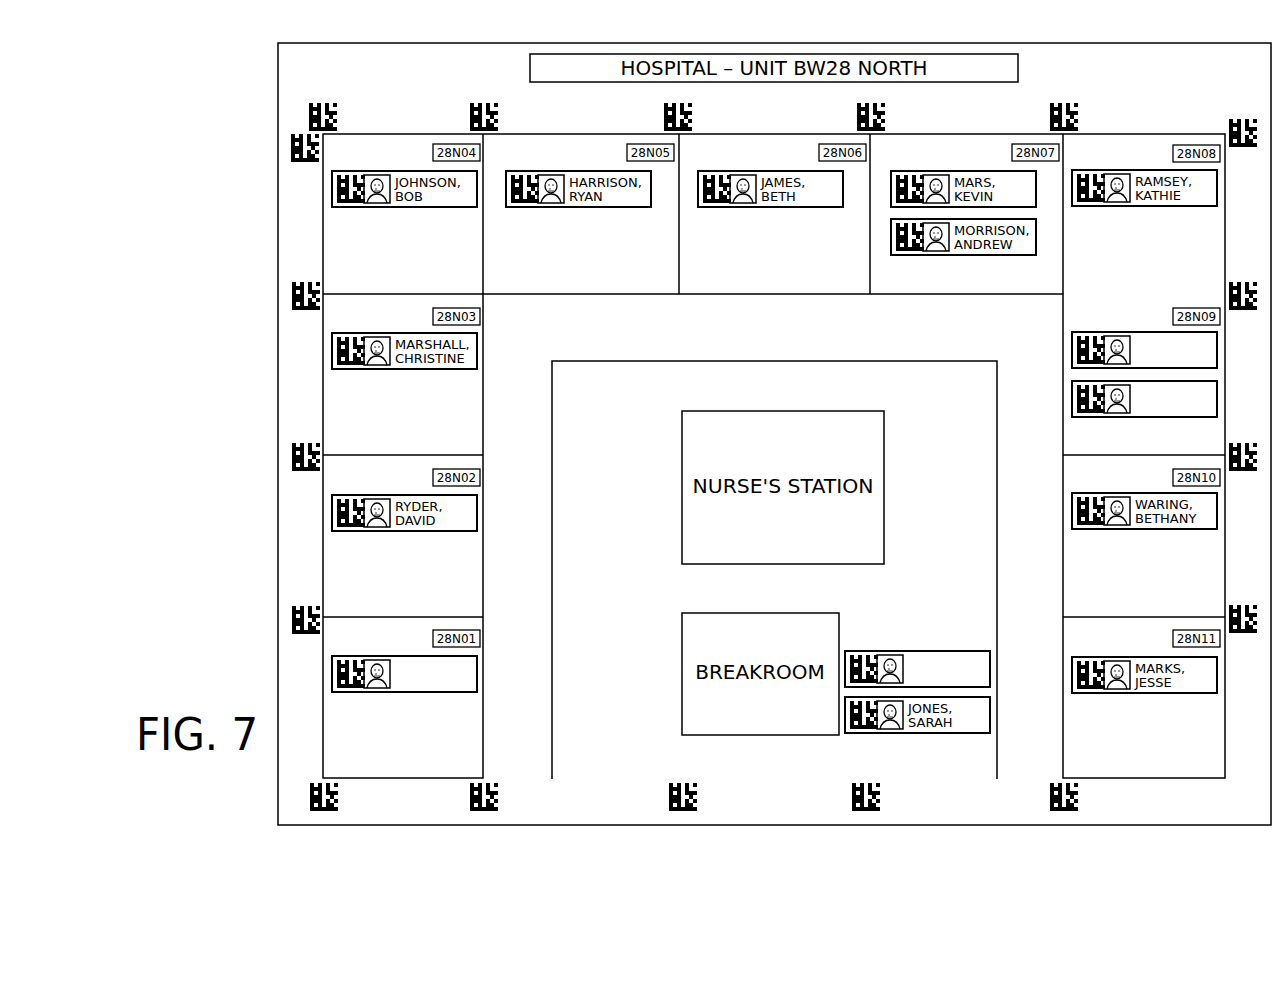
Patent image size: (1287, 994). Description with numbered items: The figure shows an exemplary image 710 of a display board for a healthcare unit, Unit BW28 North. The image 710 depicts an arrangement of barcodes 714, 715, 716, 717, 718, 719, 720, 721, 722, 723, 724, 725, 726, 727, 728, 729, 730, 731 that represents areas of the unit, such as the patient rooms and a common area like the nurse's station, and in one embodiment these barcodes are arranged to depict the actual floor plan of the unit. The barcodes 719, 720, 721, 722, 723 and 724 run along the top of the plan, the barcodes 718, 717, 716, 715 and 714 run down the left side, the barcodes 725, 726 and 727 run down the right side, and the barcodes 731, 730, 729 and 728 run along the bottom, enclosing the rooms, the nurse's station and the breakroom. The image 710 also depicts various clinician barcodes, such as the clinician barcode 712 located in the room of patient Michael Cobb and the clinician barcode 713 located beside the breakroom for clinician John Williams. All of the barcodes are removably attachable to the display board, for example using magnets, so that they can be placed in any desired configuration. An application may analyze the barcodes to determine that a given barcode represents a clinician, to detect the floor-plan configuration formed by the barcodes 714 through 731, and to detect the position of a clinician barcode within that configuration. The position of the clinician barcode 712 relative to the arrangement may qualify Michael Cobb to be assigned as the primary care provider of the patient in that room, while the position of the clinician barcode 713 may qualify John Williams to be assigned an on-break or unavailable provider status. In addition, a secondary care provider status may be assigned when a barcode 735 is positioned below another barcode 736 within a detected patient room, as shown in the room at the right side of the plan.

The image 710 is at (230, 98).
The clinician barcode 712 is at (349, 690).
The clinician barcode 713 is at (862, 650).
The barcode 714 is at (310, 793).
The barcode 715 is at (292, 620).
The barcode 716 is at (292, 457).
The barcode 717 is at (292, 293).
The barcode 718 is at (291, 149).
The barcode 719 is at (309, 113).
The barcode 720 is at (470, 114).
The barcode 721 is at (664, 114).
The barcode 722 is at (857, 114).
The barcode 723 is at (1050, 114).
The barcode 724 is at (1229, 125).
The barcode 725 is at (1243, 310).
The barcode 726 is at (1243, 471).
The barcode 727 is at (1243, 633).
The barcode 728 is at (1050, 798).
The barcode 729 is at (852, 798).
The barcode 730 is at (669, 798).
The barcode 731 is at (470, 798).
The barcode 735 is at (1072, 388).
The barcode 736 is at (1072, 352).